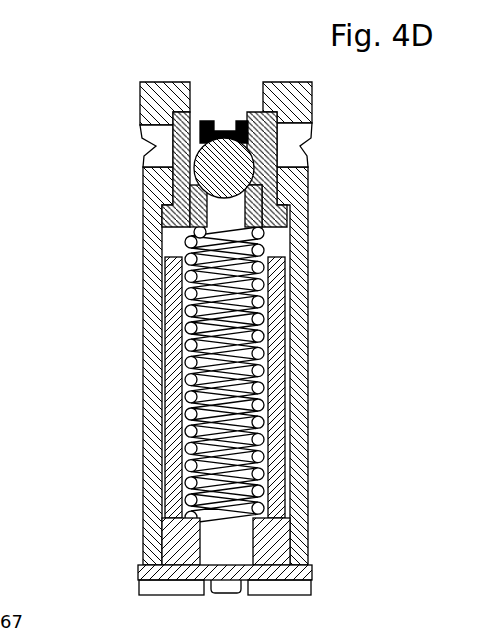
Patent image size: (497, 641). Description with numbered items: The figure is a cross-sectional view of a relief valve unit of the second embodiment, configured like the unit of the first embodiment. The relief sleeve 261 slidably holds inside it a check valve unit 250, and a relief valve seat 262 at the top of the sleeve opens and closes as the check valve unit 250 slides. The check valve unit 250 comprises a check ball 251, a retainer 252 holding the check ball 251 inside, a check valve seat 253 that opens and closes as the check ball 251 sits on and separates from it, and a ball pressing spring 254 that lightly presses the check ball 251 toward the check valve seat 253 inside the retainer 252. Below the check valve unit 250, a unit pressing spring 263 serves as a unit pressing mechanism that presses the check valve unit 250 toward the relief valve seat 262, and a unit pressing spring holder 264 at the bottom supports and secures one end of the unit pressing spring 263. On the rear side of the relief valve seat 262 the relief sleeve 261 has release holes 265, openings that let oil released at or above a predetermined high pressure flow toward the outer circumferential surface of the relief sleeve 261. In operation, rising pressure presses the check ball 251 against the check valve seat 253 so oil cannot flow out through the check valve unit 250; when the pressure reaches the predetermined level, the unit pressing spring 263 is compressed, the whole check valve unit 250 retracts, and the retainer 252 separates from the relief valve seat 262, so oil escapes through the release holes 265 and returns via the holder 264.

The check valve unit 250 is at (304, 171).
The check ball 251 is at (234, 169).
The retainer 252 is at (265, 116).
The check valve seat 253 is at (263, 206).
The ball pressing spring 254 is at (250, 137).
The relief sleeve 261 is at (151, 245).
The relief valve seat 262 is at (167, 82).
The unit pressing spring 263 is at (166, 362).
The unit pressing spring holder 264 is at (175, 563).
The release holes 265 is at (150, 148).